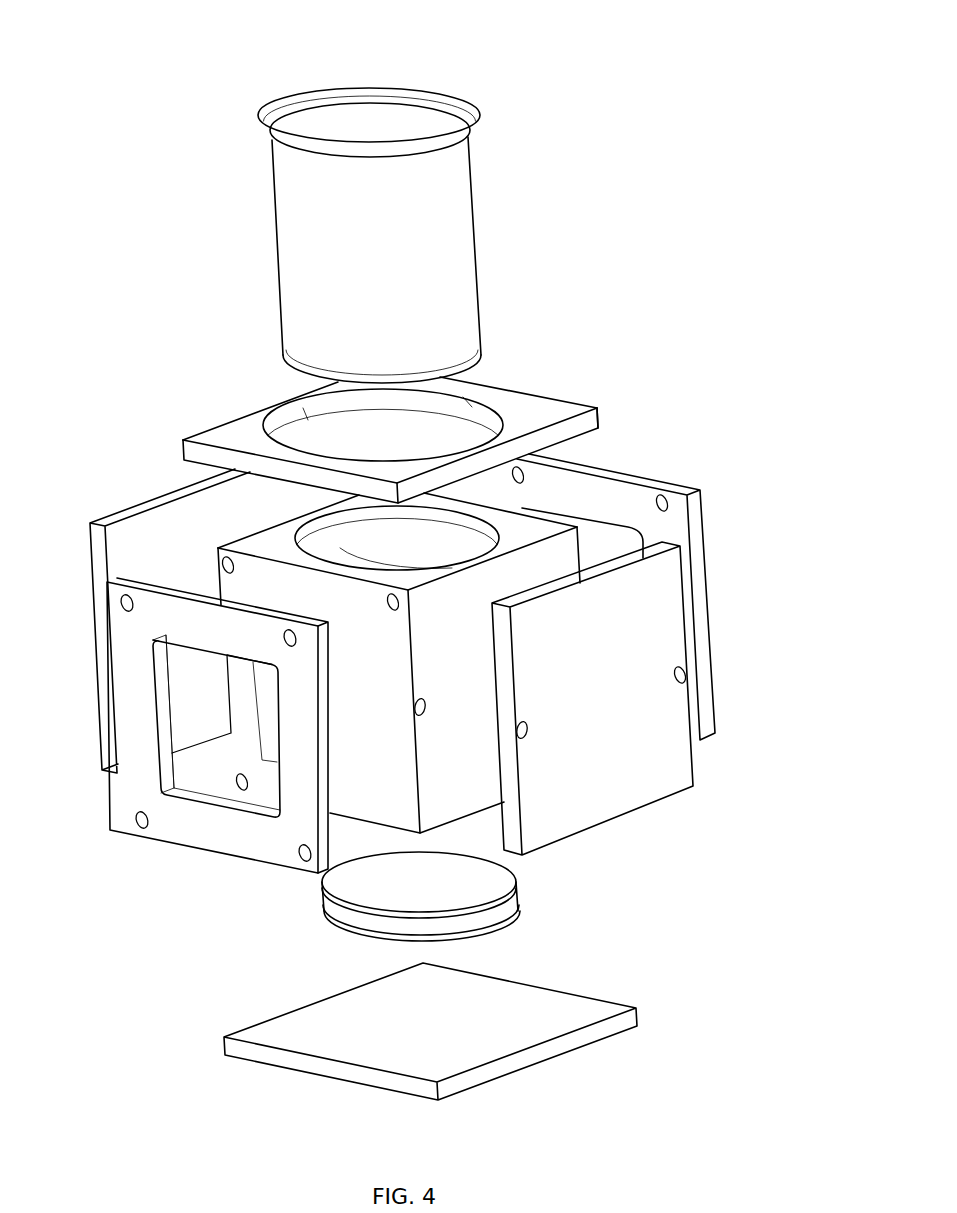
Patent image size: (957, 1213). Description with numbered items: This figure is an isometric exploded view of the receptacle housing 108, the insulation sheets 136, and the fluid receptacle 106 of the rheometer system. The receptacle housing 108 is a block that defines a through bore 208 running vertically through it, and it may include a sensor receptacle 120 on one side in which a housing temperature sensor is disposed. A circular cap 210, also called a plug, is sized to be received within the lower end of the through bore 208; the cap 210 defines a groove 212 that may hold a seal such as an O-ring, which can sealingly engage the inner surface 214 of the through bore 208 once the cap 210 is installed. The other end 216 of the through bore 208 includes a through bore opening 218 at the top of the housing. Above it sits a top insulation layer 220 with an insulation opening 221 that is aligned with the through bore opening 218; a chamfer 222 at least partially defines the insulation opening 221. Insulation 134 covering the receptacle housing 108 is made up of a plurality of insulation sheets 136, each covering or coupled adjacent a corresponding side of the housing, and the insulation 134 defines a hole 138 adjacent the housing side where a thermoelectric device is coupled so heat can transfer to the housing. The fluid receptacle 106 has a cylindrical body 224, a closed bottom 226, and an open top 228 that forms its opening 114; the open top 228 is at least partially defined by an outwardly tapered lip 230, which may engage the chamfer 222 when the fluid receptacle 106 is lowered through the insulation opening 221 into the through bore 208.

The fluid receptacle 106 is at (394, 209).
The opening 114 is at (272, 123).
The open top 228 is at (398, 112).
The outwardly tapered lip 230 is at (470, 110).
The cylindrical body 224 is at (480, 300).
The closed bottom 226 is at (473, 357).
The top insulation layer 220 is at (442, 418).
The insulation opening 221 is at (600, 418).
The chamfer 222 is at (277, 433).
The receptacle housing 108 is at (376, 654).
The through bore 208 is at (310, 548).
The inner surface 214 is at (362, 530).
The end 216 is at (440, 510).
The through bore opening 218 is at (440, 563).
The sensor receptacle 120 is at (428, 708).
The insulation 134 is at (409, 720).
The insulation sheets 136 is at (409, 734).
The hole 138 is at (610, 522).
The cap 210 is at (449, 901).
The groove 212 is at (473, 908).